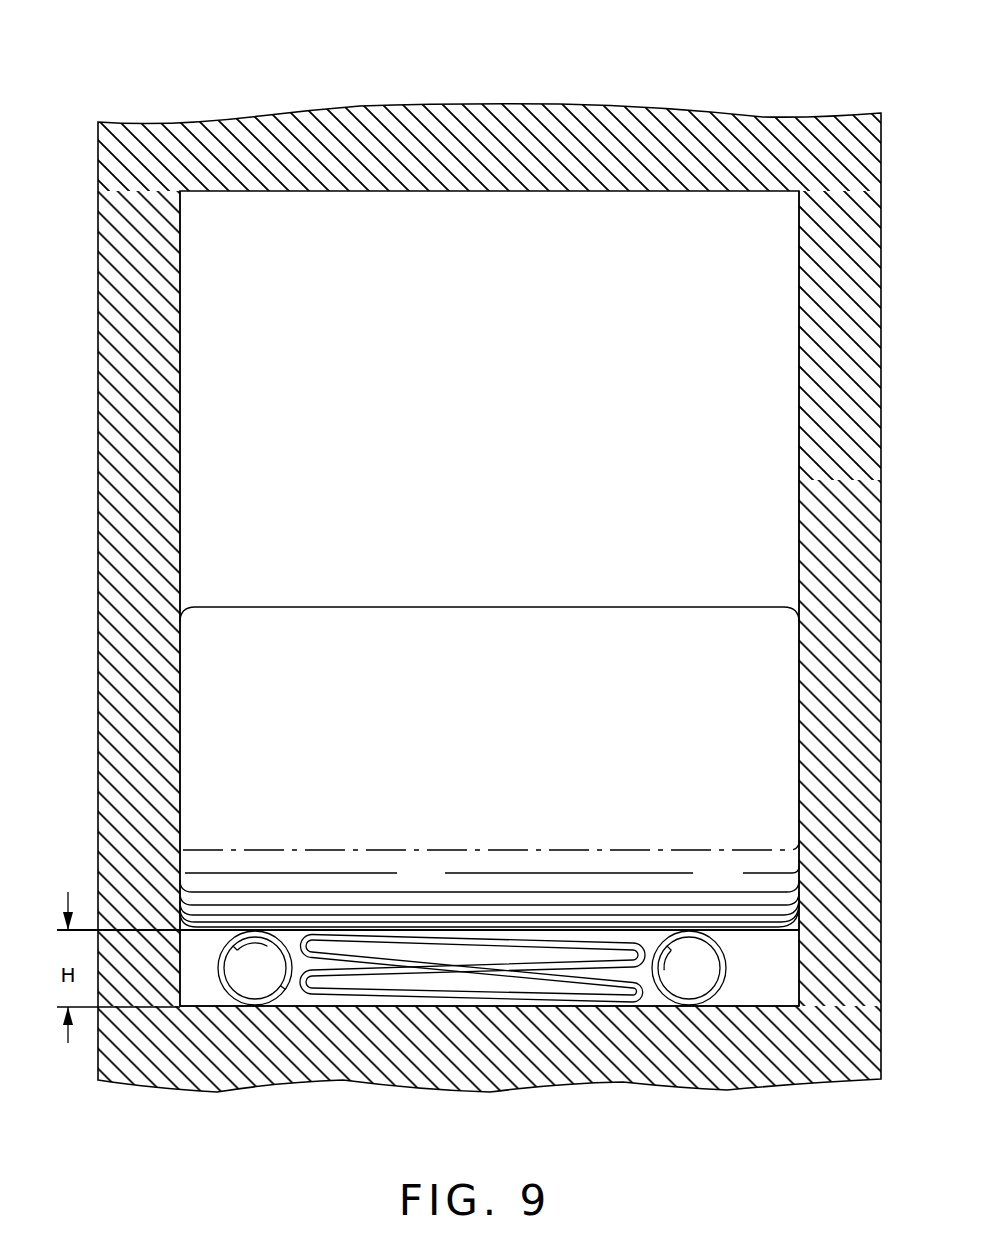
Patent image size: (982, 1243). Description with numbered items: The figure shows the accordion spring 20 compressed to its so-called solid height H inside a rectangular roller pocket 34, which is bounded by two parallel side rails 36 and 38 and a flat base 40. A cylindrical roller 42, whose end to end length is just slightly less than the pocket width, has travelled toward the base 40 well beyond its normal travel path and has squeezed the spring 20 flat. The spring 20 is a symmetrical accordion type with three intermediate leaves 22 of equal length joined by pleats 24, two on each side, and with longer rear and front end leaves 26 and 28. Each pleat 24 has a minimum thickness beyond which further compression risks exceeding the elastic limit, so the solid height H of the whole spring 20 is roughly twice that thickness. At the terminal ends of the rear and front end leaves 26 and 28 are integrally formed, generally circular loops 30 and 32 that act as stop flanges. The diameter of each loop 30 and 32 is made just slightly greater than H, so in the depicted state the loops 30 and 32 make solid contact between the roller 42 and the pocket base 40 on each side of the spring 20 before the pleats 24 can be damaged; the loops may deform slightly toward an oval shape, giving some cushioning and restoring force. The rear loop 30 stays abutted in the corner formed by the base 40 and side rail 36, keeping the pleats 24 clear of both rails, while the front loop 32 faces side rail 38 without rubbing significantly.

The spring 20 is at (475, 978).
The intermediate leaves 22 is at (472, 999).
The pleats 24 is at (315, 977).
The rear end leaf 26 is at (566, 1001).
The front end leaf 28 is at (490, 937).
The rear loop 30 is at (258, 935).
The front loop 32 is at (672, 965).
The roller pocket 34 is at (781, 124).
The side rail 36 is at (160, 366).
The side rail 38 is at (823, 305).
The base 40 is at (766, 1000).
The roller 42 is at (510, 637).